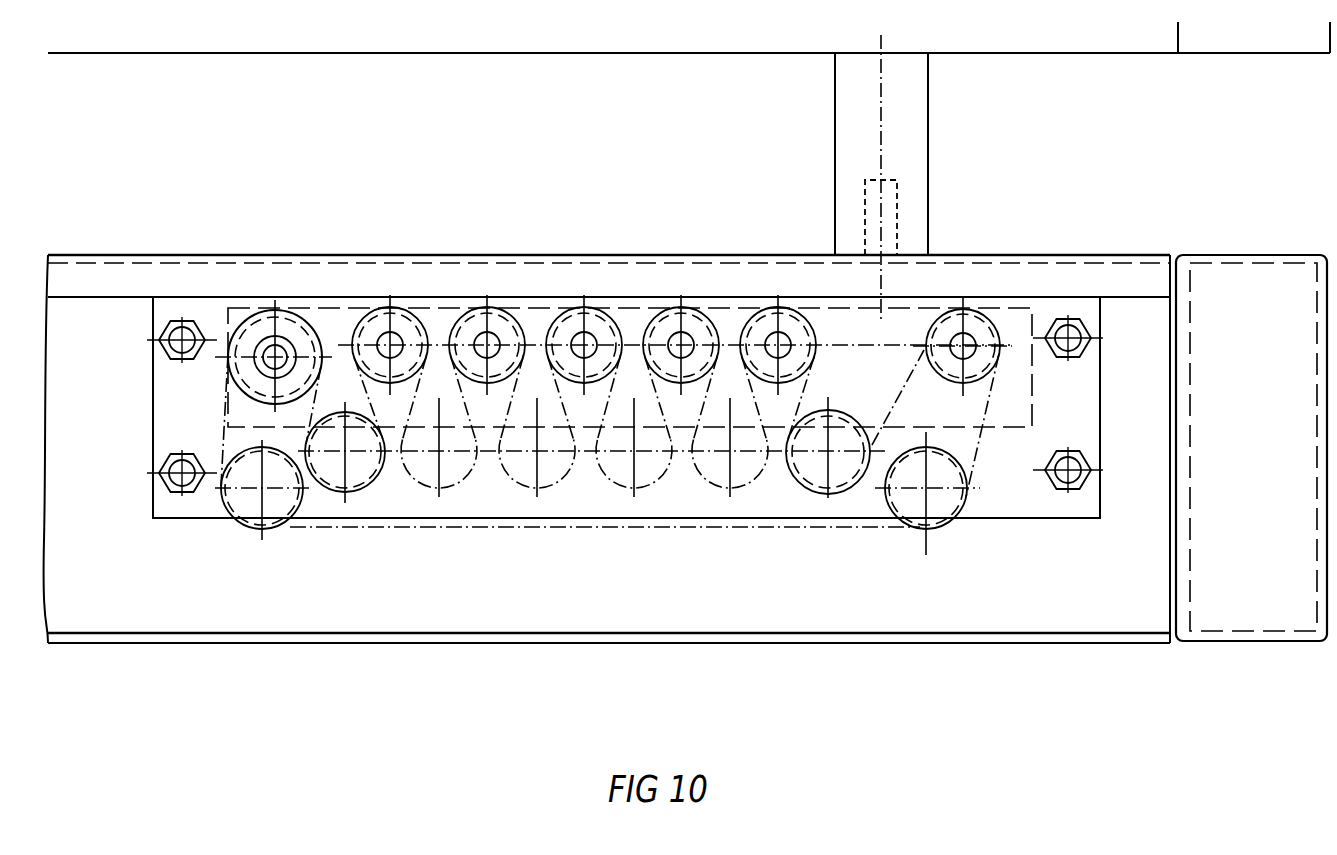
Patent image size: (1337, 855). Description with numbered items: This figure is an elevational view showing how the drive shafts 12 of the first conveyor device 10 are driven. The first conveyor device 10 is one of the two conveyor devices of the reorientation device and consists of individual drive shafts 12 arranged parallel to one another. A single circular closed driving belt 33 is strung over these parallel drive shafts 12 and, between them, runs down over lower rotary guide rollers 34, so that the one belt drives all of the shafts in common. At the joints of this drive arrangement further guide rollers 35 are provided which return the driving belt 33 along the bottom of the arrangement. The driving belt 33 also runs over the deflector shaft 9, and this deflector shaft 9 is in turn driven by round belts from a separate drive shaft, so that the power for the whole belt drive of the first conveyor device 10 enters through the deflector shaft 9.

The deflector shaft 9 is at (268, 318).
The first conveyor device 10 is at (578, 312).
The drive shafts 12 is at (583, 312).
The driving belt 33 is at (309, 430).
The lower rotary guide rollers 34 is at (445, 465).
The guide rollers 35 is at (283, 478).